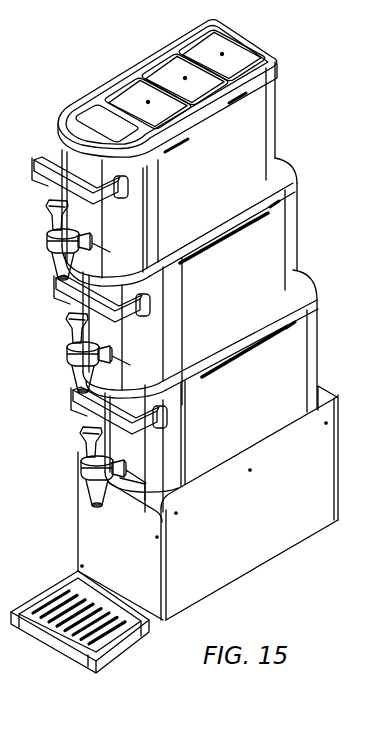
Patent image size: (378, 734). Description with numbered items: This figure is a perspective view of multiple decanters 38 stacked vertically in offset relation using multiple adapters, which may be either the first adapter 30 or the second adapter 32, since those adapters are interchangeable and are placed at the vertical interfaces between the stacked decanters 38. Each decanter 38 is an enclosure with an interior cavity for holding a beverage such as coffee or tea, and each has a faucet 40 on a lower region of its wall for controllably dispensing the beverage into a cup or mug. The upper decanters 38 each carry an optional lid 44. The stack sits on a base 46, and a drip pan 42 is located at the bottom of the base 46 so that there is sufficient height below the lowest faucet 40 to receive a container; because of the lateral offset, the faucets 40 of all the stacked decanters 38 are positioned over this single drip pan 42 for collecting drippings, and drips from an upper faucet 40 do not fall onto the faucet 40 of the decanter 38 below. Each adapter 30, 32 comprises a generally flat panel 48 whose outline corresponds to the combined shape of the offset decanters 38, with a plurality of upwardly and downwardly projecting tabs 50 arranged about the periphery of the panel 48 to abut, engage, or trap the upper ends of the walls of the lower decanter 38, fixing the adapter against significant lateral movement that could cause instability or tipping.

The first adapter 30 is at (196, 281).
The second adapter 32 is at (196, 281).
The decanter 38 is at (276, 100).
The faucet 40 is at (57, 258).
The drip pan 42 is at (47, 634).
The lid 44 is at (118, 80).
The base 46 is at (240, 578).
The panel 48 is at (290, 175).
The tabs 50 is at (100, 260).